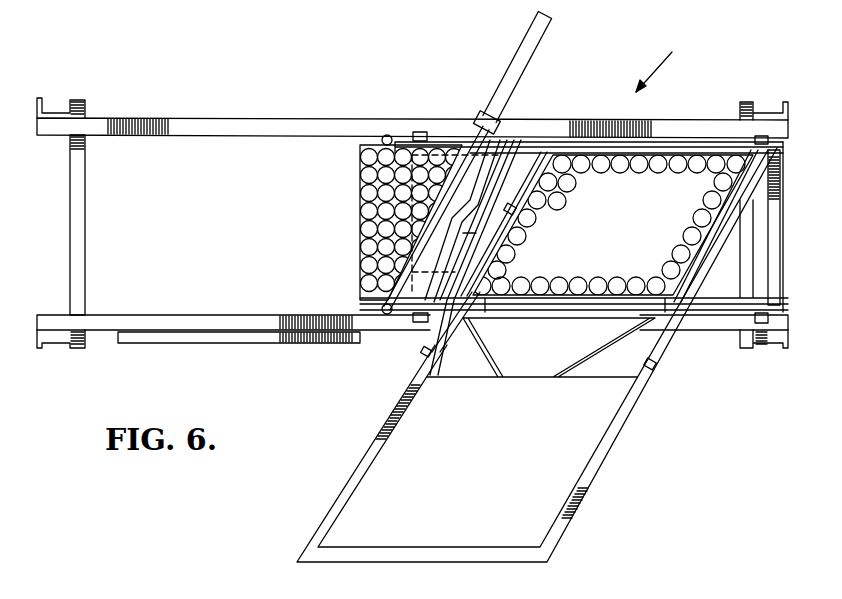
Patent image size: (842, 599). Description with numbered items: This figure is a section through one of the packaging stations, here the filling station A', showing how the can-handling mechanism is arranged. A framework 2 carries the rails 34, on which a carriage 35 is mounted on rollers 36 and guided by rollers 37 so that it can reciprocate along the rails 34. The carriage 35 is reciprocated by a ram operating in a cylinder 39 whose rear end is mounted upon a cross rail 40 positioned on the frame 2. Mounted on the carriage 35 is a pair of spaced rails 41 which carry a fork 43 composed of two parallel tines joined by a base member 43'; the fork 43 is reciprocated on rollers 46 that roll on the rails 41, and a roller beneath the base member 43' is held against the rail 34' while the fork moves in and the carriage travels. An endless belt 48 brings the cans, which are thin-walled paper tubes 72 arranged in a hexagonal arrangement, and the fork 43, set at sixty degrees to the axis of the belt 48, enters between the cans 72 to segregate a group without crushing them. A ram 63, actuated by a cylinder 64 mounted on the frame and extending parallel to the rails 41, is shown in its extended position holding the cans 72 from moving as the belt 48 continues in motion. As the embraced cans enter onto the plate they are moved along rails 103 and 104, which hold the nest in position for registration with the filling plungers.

The framework 2 is at (63, 110).
The rails 34 is at (412, 224).
The rail 34' is at (239, 352).
The carriage 35 is at (478, 244).
The rollers 36 is at (430, 130).
The rollers 37 is at (387, 140).
The cylinder 39 is at (482, 216).
The cross rail 40 is at (746, 356).
The spaced rails 41 is at (358, 472).
The fork 43 is at (613, 225).
The base member 43' is at (541, 366).
The rollers 46 is at (540, 209).
The endless belt 48 is at (360, 300).
The ram 63 is at (442, 240).
The cylinder 64 is at (521, 57).
The paper tubes 72 is at (366, 234).
The rail 103 is at (578, 140).
The rail 104 is at (700, 306).
The packaging station A' is at (655, 312).